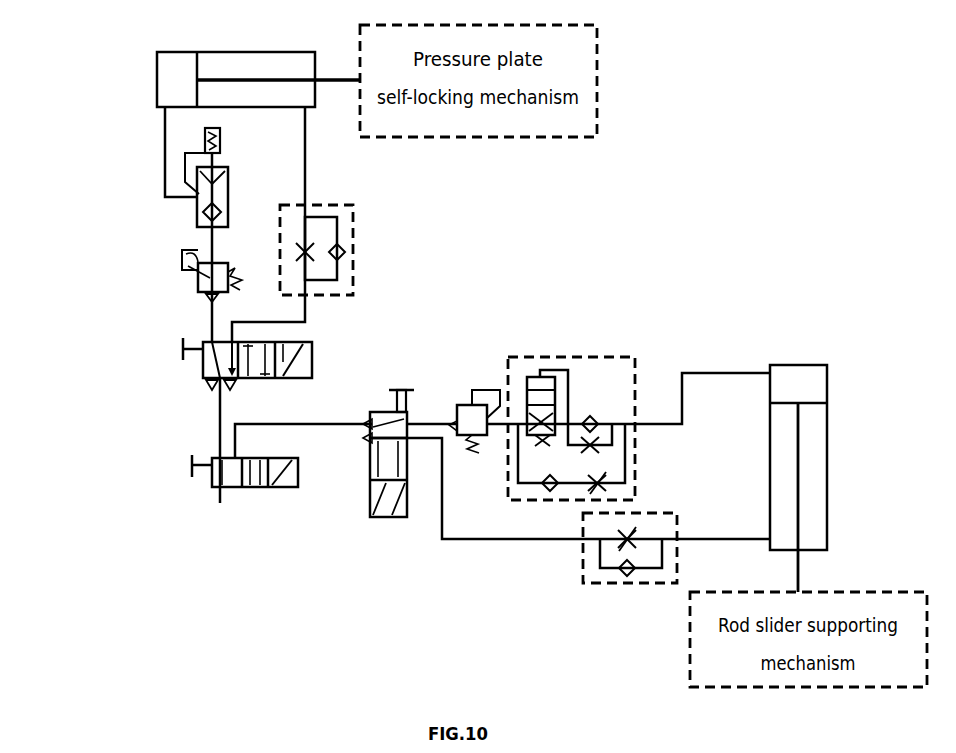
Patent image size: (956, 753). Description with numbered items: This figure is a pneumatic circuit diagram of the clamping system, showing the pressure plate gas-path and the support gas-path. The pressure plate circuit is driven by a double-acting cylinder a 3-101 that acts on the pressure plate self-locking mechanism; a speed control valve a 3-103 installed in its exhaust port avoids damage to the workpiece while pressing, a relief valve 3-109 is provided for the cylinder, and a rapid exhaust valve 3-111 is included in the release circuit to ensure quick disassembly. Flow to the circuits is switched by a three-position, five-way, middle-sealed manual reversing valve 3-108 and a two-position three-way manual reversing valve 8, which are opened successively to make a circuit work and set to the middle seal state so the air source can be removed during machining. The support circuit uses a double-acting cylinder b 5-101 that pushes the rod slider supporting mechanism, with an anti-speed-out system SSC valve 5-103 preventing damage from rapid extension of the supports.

The cylinder a 3-101 is at (186, 62).
The rapid exhaust valve 3-111 is at (120, 161).
The relief valve 3-109 is at (127, 244).
The manual reversing valve 3-108 is at (162, 335).
The two-position three-way manual reversing valve 8 is at (155, 436).
The speed control valve a 3-103 is at (377, 223).
The anti-speed-out system SSC valve 5-103 is at (588, 392).
The cylinder b 5-101 is at (842, 439).